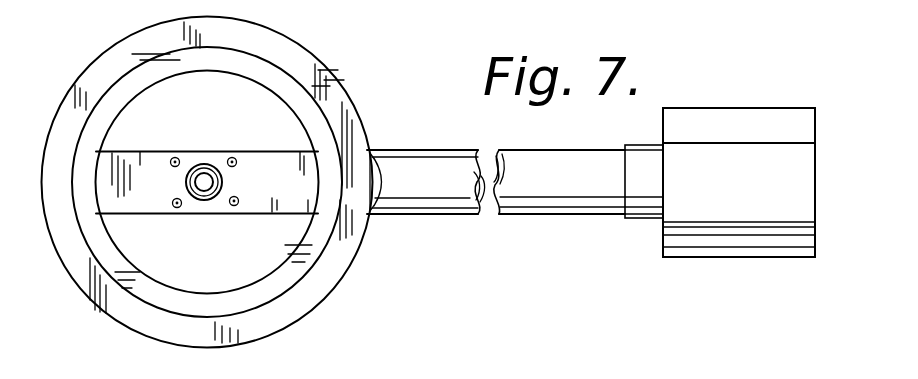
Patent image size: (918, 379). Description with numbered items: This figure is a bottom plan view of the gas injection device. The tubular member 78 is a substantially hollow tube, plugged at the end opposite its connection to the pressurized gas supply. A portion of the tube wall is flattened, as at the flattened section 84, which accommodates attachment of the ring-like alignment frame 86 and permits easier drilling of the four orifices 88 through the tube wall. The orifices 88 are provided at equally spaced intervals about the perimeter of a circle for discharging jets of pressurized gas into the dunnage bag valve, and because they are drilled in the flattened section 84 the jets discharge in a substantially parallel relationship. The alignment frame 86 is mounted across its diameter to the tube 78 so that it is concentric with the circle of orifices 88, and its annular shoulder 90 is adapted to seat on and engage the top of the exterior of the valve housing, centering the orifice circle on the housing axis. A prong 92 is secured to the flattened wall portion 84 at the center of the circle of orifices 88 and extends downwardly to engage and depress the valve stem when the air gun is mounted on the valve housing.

The tubular member 78 is at (413, 208).
The flattened section 84 is at (255, 207).
The alignment frame 86 is at (318, 72).
The orifices 88 is at (232, 158).
The annular shoulder 90 is at (182, 62).
The prong 92 is at (206, 182).